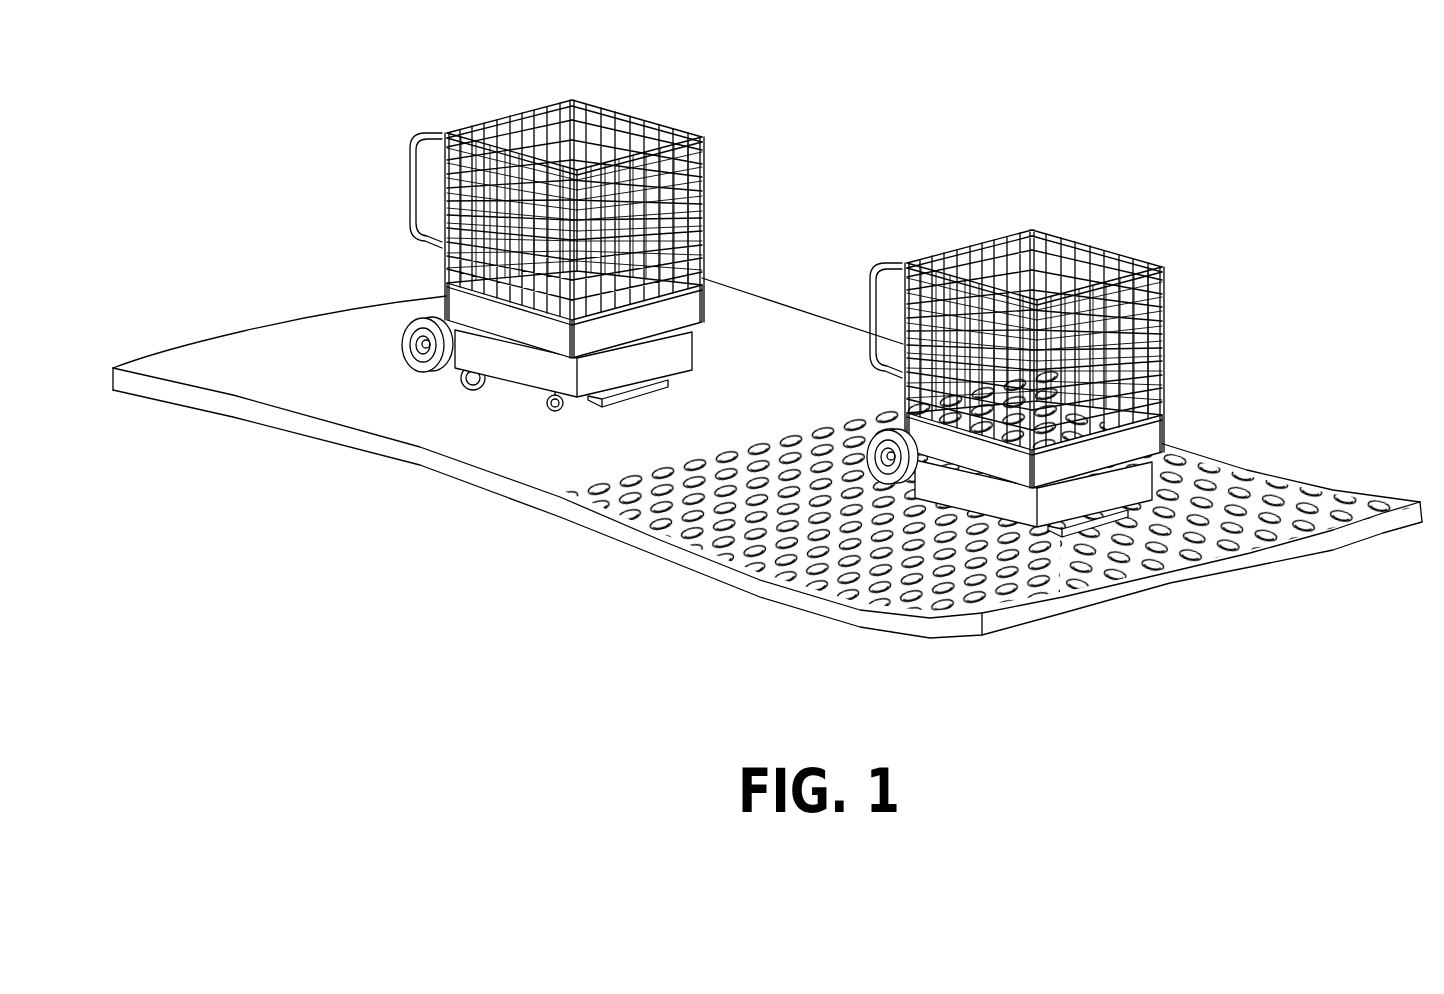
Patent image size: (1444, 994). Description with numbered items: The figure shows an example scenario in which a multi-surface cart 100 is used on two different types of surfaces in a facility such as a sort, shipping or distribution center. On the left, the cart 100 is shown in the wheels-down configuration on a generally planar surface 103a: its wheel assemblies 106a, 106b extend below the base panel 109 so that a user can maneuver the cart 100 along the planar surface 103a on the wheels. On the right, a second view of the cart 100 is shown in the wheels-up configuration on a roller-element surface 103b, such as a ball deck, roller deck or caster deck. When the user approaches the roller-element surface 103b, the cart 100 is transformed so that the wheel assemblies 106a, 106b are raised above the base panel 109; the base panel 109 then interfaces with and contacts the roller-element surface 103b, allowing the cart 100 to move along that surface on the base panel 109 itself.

The cart 100 is at (466, 97).
The generally planar surface 103a is at (357, 409).
The roller-element surface 103b is at (717, 557).
The wheel assembly 106a is at (560, 409).
The wheel assembly 106b is at (477, 388).
The base panel 109 is at (637, 400).